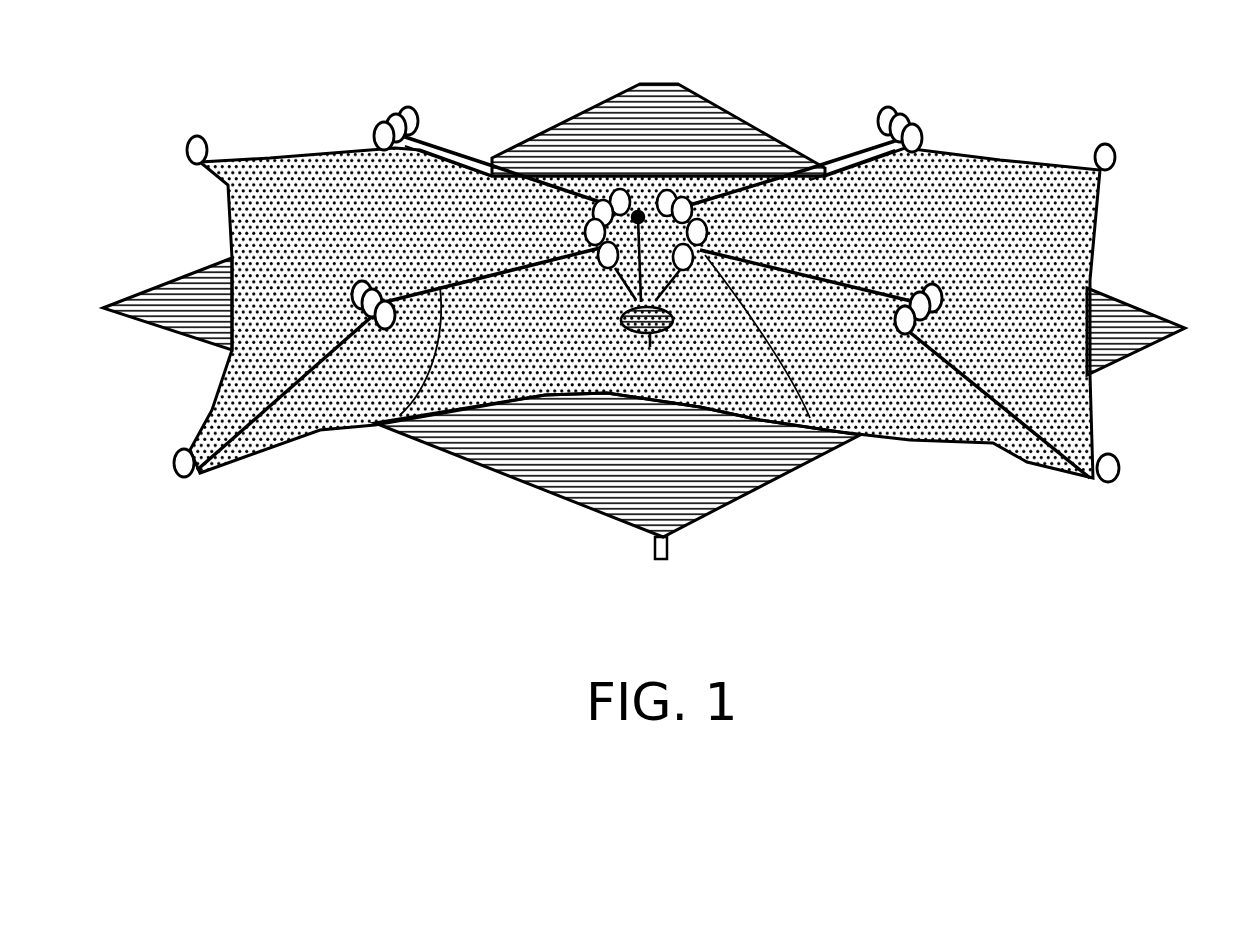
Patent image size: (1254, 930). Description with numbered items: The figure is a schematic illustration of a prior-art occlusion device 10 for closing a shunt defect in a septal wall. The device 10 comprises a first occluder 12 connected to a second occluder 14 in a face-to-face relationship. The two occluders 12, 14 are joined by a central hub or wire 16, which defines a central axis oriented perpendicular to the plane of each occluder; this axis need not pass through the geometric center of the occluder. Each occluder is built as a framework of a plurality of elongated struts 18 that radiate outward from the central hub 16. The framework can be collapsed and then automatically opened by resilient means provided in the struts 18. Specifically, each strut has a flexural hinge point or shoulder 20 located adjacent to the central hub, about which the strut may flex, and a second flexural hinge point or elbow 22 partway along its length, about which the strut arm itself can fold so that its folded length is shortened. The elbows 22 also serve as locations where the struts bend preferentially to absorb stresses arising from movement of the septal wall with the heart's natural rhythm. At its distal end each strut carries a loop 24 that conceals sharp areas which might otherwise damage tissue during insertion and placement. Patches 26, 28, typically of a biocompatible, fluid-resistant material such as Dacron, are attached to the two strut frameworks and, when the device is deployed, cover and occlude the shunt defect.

The occlusion device 10 is at (1018, 95).
The first occluder 12 is at (292, 175).
The second occluder 14 is at (762, 485).
The central hub or wire 16 is at (690, 208).
The elongated struts 18 is at (470, 165).
The flexural hinge point or shoulder 20 is at (637, 212).
The flexural hinge point or elbow 22 is at (400, 110).
The loop 24 is at (197, 136).
The patch 26 is at (1005, 379).
The patch 28 is at (537, 466).